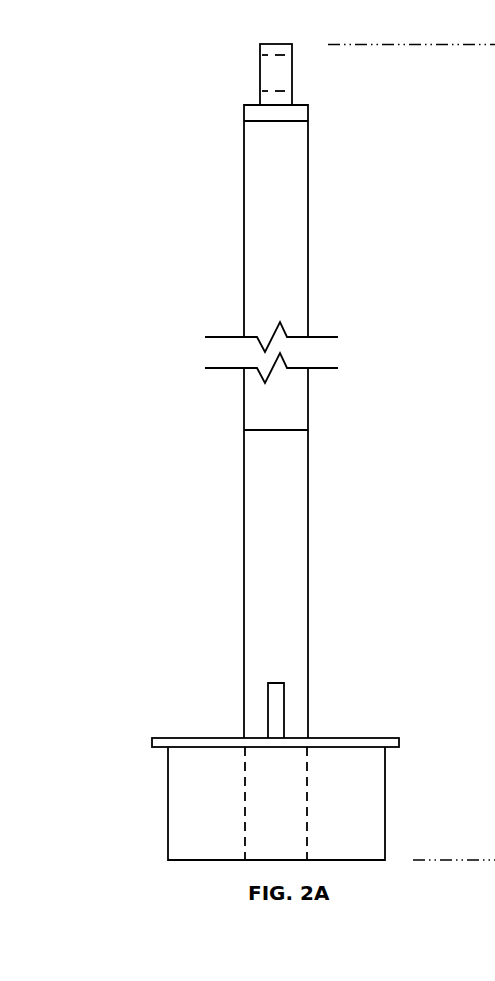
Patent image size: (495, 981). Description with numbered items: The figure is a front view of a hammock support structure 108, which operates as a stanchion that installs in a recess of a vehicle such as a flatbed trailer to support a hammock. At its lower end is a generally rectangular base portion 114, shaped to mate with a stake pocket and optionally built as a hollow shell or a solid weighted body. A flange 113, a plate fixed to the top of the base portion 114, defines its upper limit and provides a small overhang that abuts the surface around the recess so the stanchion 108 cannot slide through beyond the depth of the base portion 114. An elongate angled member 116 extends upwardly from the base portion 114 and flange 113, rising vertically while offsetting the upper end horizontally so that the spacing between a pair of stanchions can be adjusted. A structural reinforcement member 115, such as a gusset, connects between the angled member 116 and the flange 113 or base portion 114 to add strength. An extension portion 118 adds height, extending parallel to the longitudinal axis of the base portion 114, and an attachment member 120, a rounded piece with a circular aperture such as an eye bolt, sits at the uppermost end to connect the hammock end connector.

The hammock support structure 108 is at (131, 340).
The flange 113 is at (398, 737).
The base portion 114 is at (385, 783).
The structural reinforcement member 115 is at (268, 705).
The elongate angled member 116 is at (307, 568).
The extension portion 118 is at (307, 245).
The attachment member 120 is at (260, 51).